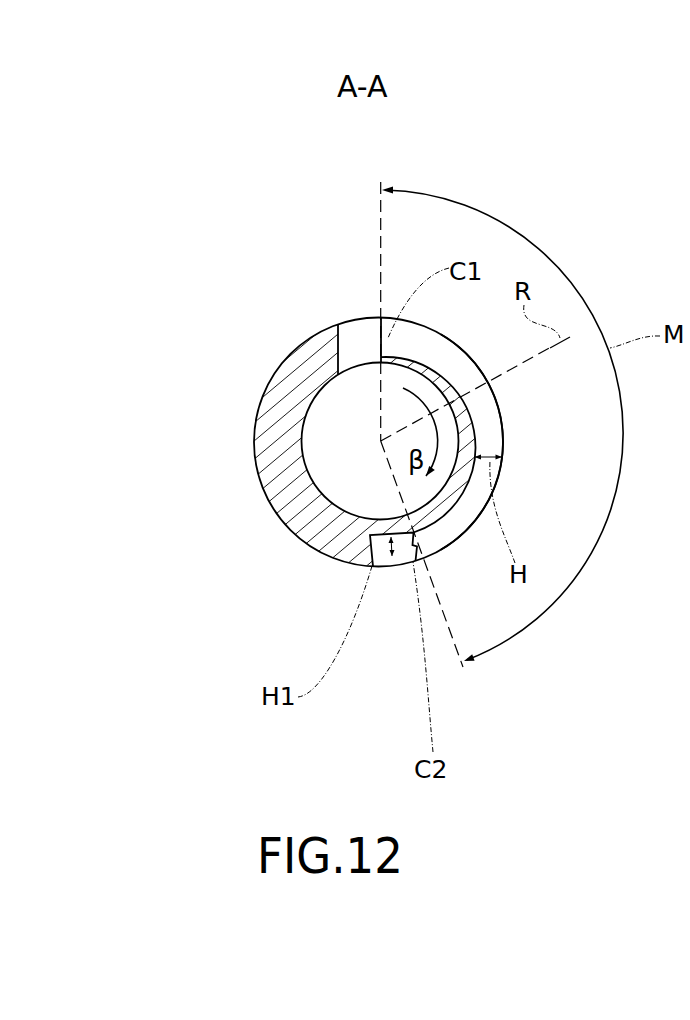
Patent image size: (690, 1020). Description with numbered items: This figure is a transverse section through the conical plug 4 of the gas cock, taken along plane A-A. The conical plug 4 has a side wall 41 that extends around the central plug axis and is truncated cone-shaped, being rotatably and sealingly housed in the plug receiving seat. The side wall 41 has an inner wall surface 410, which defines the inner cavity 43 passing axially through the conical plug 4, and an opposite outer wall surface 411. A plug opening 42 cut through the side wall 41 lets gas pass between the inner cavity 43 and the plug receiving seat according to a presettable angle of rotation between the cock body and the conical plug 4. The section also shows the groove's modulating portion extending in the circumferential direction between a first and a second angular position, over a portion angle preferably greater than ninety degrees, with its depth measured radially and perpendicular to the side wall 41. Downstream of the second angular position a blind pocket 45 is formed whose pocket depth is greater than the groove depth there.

The conical plug 4 is at (216, 302).
The side wall 41 is at (290, 404).
The inner wall surface 410 is at (305, 470).
The outer wall surface 411 is at (503, 418).
The plug opening 42 is at (355, 341).
The inner cavity 43 is at (352, 480).
The blind pocket 45 is at (370, 552).